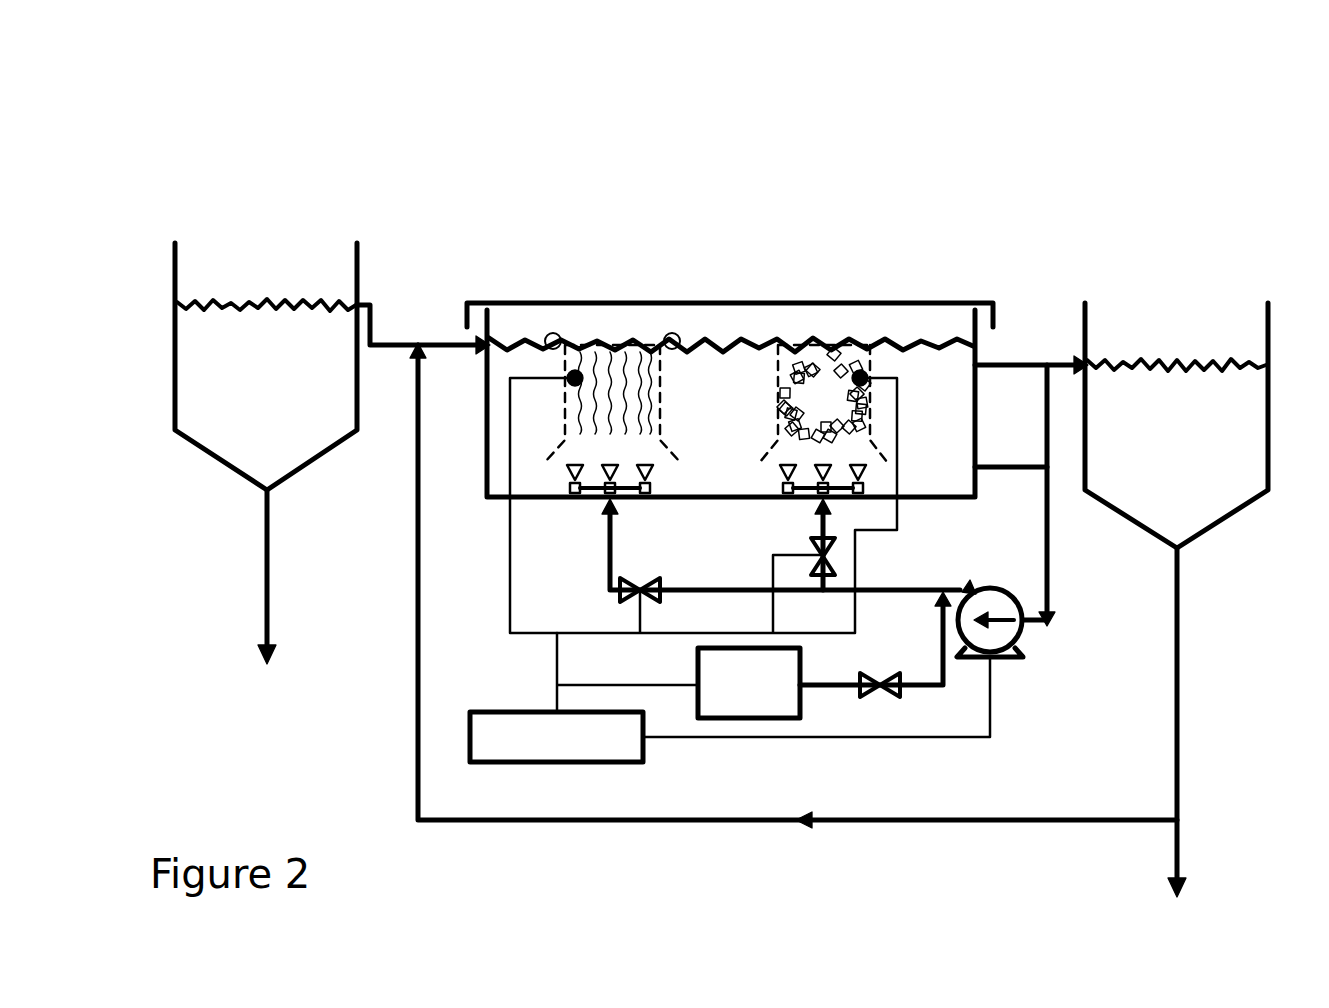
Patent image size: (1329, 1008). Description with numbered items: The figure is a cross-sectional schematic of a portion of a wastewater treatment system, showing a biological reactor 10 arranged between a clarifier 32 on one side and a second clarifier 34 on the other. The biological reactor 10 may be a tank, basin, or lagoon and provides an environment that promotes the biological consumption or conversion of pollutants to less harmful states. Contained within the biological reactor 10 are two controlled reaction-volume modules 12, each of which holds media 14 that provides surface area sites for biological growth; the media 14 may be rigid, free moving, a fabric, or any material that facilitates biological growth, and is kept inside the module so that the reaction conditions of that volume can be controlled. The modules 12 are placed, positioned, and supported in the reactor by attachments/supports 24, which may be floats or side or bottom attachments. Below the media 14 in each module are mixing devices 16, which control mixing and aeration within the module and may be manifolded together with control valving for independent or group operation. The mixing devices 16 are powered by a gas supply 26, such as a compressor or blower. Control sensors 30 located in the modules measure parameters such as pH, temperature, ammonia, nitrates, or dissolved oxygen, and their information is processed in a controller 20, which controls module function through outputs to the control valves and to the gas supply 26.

The biological reactor 10 is at (566, 148).
The controlled reaction-volume module 12 is at (660, 410).
The media 14 is at (717, 406).
The mixing devices 16 is at (775, 505).
The controller 20 is at (730, 570).
The attachments/supports 24 is at (658, 400).
The gas supply 26 is at (824, 655).
The control sensors 30 is at (575, 378).
The clarifier 32 is at (266, 453).
The second clarifier 34 is at (1176, 600).